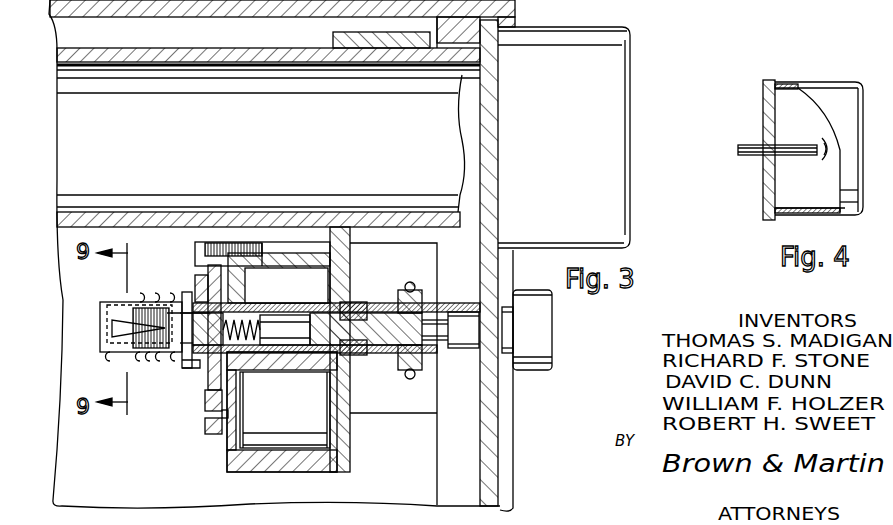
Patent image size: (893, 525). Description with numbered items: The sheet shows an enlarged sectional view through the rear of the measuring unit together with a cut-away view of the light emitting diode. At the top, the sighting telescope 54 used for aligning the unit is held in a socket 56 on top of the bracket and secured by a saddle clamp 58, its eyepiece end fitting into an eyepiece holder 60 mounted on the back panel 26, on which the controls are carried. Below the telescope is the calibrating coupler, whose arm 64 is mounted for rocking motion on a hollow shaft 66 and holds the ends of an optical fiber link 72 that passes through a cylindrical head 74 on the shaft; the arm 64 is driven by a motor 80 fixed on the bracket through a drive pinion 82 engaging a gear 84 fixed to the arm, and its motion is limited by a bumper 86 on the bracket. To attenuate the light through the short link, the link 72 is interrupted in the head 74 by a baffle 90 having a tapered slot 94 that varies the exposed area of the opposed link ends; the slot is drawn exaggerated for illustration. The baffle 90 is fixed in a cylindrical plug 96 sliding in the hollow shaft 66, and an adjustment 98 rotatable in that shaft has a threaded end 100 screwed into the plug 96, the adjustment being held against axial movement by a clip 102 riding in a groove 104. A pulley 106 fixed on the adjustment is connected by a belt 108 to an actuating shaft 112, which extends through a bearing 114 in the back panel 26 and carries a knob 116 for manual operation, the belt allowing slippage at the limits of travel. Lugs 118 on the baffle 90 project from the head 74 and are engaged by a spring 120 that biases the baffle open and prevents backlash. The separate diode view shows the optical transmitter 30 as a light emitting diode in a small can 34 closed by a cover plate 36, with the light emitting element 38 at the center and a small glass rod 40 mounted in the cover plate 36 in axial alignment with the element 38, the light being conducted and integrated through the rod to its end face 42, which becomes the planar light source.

In FIG. 3, the back panel 26 is at (487, 483).
In FIG. 4, the optical transmitter 30 is at (832, 82).
In FIG. 4, the can 34 is at (783, 84).
In FIG. 4, the cover plate 36 is at (763, 92).
In FIG. 4, the light emitting element 38 is at (822, 140).
In FIG. 4, the glass rod 40 is at (795, 155).
In FIG. 4, the end face 42 is at (738, 154).
In FIG. 3, the sighting telescope 54 is at (168, 51).
In FIG. 3, the socket 56 is at (381, 214).
In FIG. 3, the saddle clamp 58 is at (333, 42).
In FIG. 3, the eyepiece holder 60 is at (552, 50).
In FIG. 3, the arm 64 is at (196, 288).
In FIG. 3, the hollow shaft 66 is at (373, 352).
In FIG. 3, the optical fiber link 72 is at (115, 330).
In FIG. 3, the cylindrical head 74 is at (108, 352).
In FIG. 3, the motor 80 is at (302, 438).
In FIG. 3, the drive pinion 82 is at (215, 434).
In FIG. 3, the gear 84 is at (210, 381).
In FIG. 3, the bumper 86 is at (196, 282).
In FIG. 3, the baffle 90 is at (102, 318).
In FIG. 3, the slot 94 is at (108, 318).
In FIG. 3, the cylindrical plug 96 is at (250, 309).
In FIG. 3, the adjustment 98 is at (296, 372).
In FIG. 3, the threaded end 100 is at (262, 316).
In FIG. 3, the clip 102 is at (355, 302).
In FIG. 3, the groove 104 is at (373, 315).
In FIG. 3, the pulley 106 is at (425, 268).
In FIG. 3, the belt 108 is at (408, 380).
In FIG. 3, the actuating shaft 112 is at (437, 348).
In FIG. 3, the bearing 114 is at (462, 314).
In FIG. 3, the knob 116 is at (540, 340).
In FIG. 3, the lugs 118 is at (187, 372).
In FIG. 3, the spring 120 is at (172, 364).